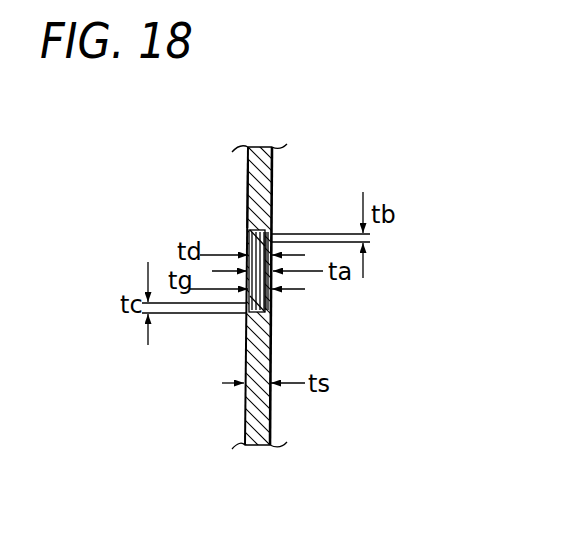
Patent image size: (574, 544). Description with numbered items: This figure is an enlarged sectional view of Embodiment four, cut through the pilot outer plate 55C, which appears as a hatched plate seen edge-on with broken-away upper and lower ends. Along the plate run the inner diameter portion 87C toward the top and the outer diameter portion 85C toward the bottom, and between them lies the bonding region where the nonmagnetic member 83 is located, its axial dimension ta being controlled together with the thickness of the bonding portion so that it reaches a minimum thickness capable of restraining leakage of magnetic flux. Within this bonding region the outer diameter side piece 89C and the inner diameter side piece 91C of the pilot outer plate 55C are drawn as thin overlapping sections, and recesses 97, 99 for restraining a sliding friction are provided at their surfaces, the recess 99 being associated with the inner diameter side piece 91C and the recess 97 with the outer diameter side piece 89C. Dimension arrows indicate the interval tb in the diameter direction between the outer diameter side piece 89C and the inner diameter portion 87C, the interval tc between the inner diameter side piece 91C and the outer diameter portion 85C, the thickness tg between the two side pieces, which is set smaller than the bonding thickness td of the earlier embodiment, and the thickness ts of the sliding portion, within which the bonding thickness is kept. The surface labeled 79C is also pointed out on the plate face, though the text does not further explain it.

The pilot outer plate 55C is at (283, 197).
The inner diameter portion 87C is at (273, 172).
The outer diameter portion 85C is at (273, 427).
The nonmagnetic member 83 is at (247, 197).
The front surface of plate 79C is at (229, 219).
The inner diameter side piece 91C is at (248, 245).
The recess 99 is at (248, 238).
The recess 97 is at (274, 312).
The outer diameter side piece 89C is at (273, 304).